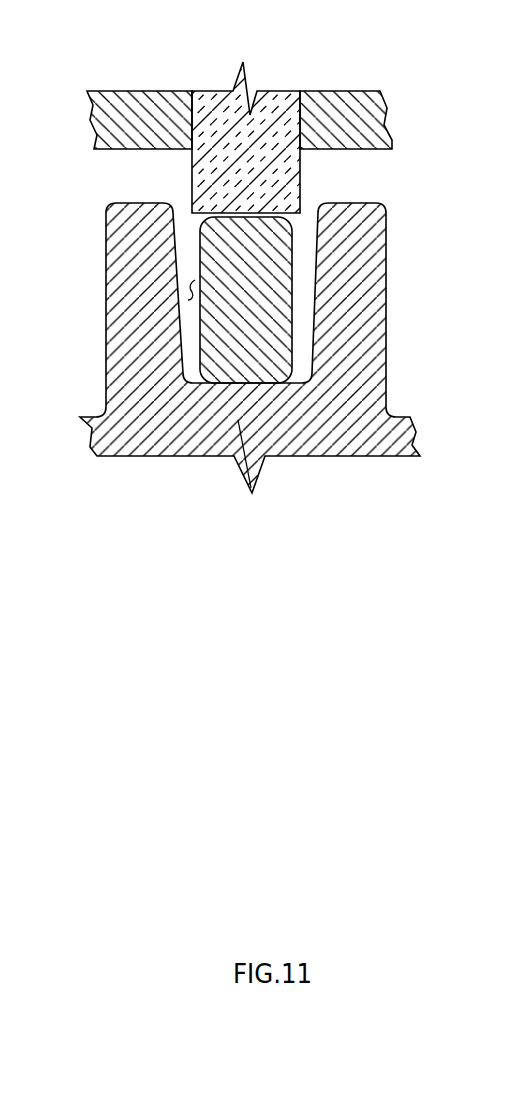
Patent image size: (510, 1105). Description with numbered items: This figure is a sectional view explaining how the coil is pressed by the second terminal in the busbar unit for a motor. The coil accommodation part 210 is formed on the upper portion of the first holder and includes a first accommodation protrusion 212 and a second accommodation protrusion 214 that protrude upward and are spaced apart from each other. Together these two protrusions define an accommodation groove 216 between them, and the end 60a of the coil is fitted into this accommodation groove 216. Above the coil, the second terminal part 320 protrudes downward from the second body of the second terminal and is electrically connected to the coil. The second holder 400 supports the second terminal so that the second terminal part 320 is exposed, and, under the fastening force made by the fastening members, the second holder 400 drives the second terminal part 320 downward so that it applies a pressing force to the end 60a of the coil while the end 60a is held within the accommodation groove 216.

The second holder 400 is at (318, 91).
The second terminal part 320 is at (203, 175).
The coil accommodation part 210 is at (396, 303).
The first accommodation protrusion 212 is at (118, 262).
The second accommodation protrusion 214 is at (366, 255).
The accommodation groove 216 is at (185, 297).
The end of the coil 60a is at (268, 342).